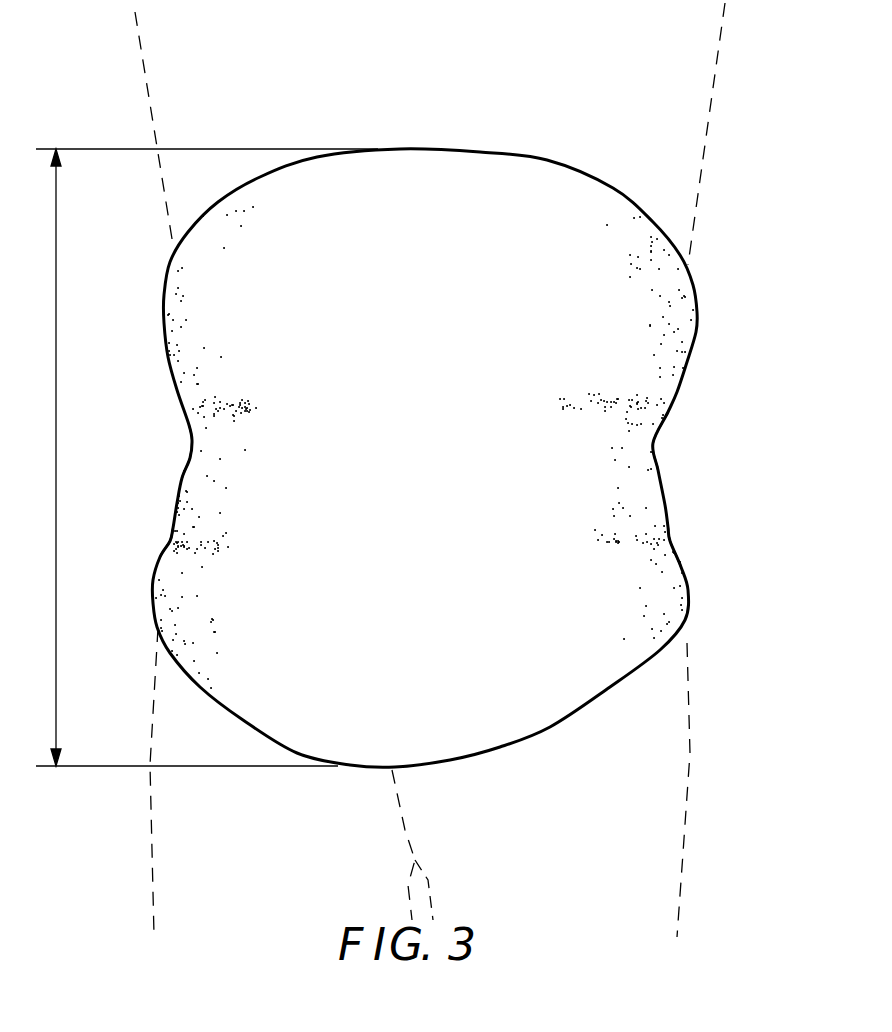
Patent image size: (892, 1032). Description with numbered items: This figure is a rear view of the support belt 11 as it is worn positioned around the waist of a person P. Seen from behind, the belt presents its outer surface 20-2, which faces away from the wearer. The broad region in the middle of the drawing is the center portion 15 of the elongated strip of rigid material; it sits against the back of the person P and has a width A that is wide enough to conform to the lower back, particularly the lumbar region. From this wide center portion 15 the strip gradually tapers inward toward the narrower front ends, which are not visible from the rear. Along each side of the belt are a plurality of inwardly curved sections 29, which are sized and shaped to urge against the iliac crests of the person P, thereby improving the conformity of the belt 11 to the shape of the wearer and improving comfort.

The outer surface 20-2 is at (432, 178).
The center portion 15 is at (420, 523).
The inwardly curved sections 29 is at (192, 440).
The person P is at (690, 148).
The width A is at (207, 457).
The support belt 11 is at (706, 596).